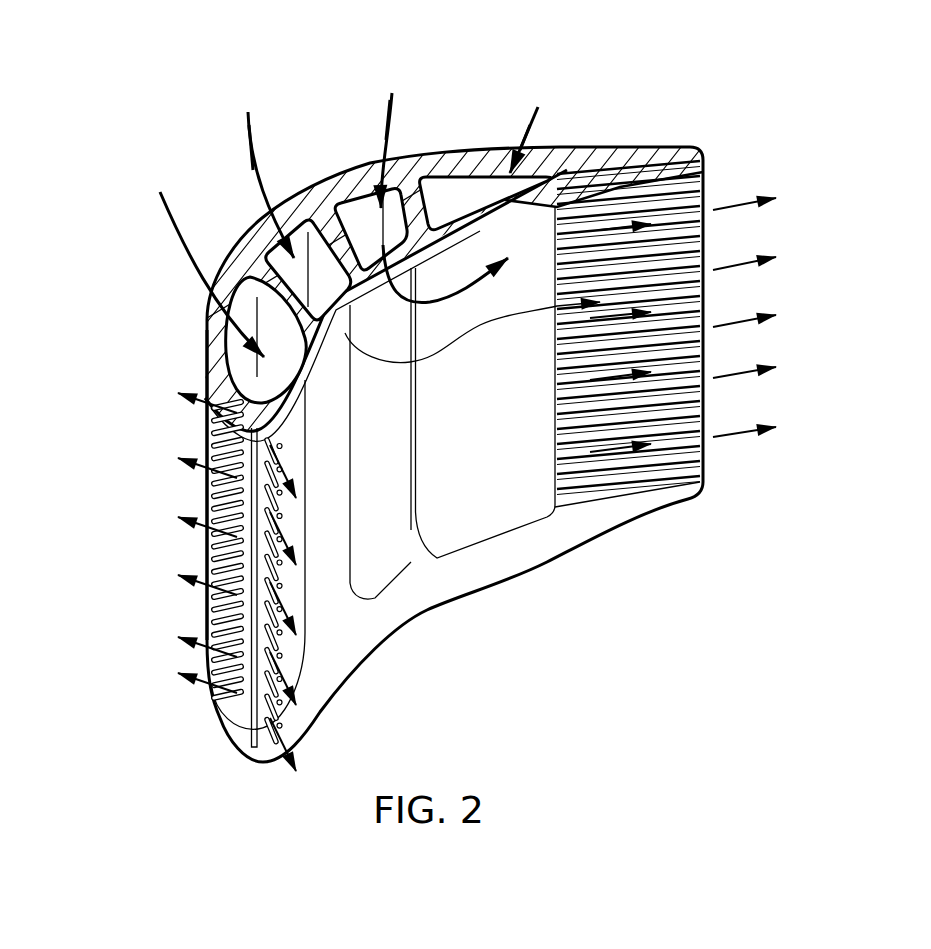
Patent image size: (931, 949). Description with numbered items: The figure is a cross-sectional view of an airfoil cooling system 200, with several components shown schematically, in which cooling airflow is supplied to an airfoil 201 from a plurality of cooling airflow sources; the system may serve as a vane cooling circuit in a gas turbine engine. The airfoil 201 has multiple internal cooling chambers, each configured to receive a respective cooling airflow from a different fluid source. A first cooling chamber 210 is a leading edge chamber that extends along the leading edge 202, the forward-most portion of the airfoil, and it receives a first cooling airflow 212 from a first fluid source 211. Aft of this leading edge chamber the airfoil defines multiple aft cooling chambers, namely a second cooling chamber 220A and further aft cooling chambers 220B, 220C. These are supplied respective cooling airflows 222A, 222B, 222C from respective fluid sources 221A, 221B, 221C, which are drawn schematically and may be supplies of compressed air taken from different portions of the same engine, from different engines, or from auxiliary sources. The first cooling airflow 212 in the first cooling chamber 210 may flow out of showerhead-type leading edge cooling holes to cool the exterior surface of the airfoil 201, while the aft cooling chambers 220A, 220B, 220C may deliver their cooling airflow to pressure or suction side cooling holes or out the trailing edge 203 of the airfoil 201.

The airfoil cooling system 200 is at (102, 60).
The airfoil 201 is at (205, 328).
The leading edge 202 is at (207, 386).
The trailing edge 203 is at (705, 170).
The first cooling chamber 210 is at (243, 305).
The first fluid source 211 is at (171, 248).
The first cooling airflow 212 is at (182, 243).
The second cooling chamber 220A is at (297, 228).
The aft cooling chamber 220B is at (362, 200).
The aft cooling chamber 220C is at (440, 178).
The second fluid source 221A is at (272, 159).
The fluid source 221B is at (444, 171).
The fluid source 221C is at (567, 116).
The second cooling airflow 222A is at (250, 135).
The cooling airflow 222B is at (389, 113).
The cooling airflow 222C is at (528, 130).